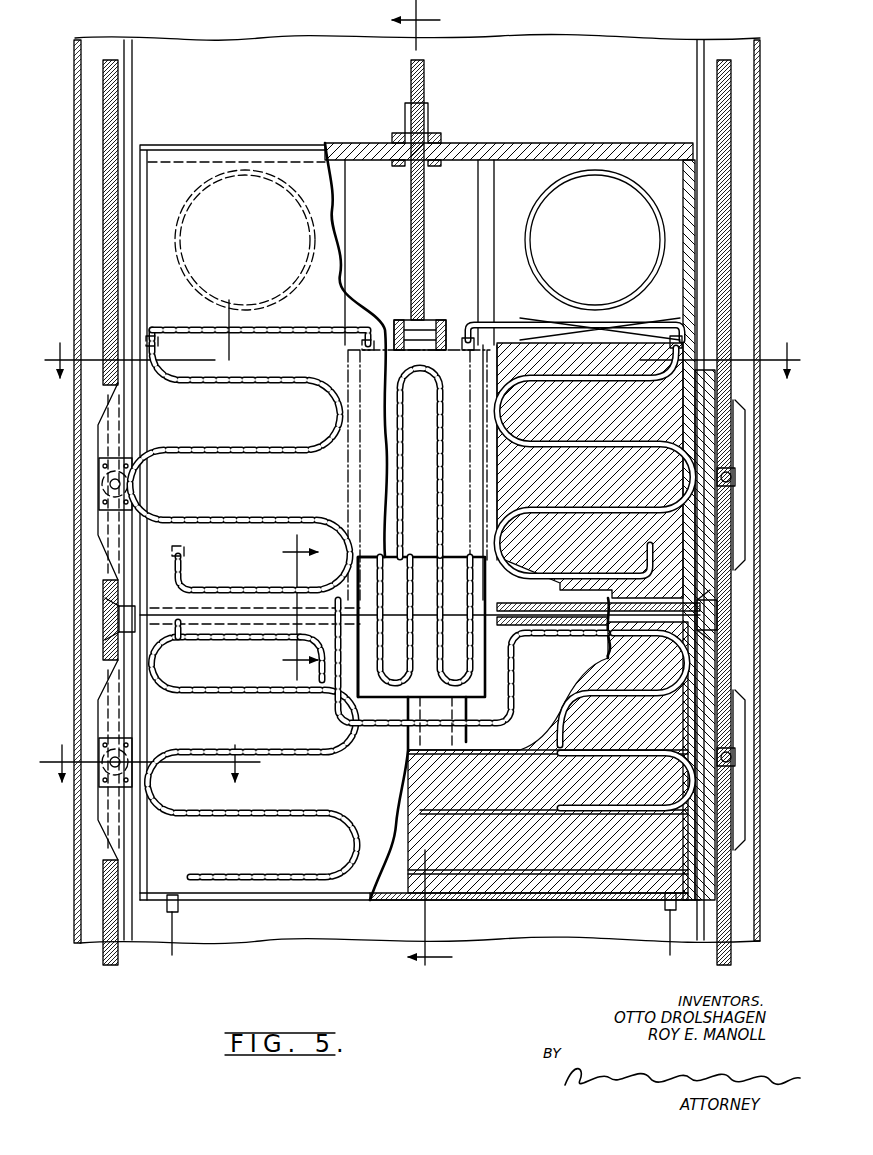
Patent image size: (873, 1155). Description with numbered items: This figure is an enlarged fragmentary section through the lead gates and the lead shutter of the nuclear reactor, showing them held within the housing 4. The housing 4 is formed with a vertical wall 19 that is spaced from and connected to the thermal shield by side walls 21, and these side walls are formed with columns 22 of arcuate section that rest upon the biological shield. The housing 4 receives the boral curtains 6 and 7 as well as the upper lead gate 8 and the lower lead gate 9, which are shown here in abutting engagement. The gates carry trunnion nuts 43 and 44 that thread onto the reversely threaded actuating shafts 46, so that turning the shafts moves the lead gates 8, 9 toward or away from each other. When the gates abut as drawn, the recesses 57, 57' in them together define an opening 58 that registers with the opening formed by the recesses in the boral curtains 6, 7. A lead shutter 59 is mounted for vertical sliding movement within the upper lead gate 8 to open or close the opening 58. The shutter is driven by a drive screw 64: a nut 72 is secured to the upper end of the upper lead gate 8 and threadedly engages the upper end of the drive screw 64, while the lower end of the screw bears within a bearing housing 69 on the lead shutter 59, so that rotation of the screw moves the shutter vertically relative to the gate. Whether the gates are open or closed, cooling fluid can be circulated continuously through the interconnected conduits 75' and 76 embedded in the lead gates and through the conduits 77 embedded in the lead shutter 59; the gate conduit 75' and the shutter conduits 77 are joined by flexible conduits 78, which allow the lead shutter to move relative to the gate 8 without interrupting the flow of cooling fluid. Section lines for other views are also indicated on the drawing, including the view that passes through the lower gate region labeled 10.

The vertical wall 19 is at (238, 42).
The boral curtain 7 is at (427, 483).
The housing 4 is at (74, 76).
The side wall 21 is at (128, 78).
The column 22 is at (74, 120).
The drive screw 64 is at (424, 82).
The nut 72 is at (425, 116).
The flexible conduit 78 is at (182, 216).
The bearing housing 69 is at (426, 320).
The boral curtain 6 is at (422, 350).
The conduit 75' is at (258, 360).
The conduit 77 is at (406, 390).
The trunnion nut 43 is at (112, 484).
The upper lead gate 8 is at (415, 522).
The section line 10- 10 is at (286, 607).
The opening 58 is at (358, 598).
The recess 57 is at (525, 520).
The recess 57' is at (550, 757).
The actuating shaft 46 is at (118, 625).
The lead shutter 59 is at (388, 665).
The lower lead gate 9 is at (198, 749).
The trunnion nut 44 is at (112, 768).
The conduit 76 is at (515, 875).